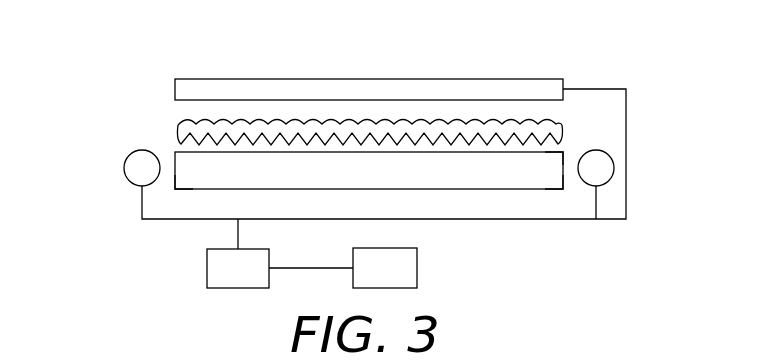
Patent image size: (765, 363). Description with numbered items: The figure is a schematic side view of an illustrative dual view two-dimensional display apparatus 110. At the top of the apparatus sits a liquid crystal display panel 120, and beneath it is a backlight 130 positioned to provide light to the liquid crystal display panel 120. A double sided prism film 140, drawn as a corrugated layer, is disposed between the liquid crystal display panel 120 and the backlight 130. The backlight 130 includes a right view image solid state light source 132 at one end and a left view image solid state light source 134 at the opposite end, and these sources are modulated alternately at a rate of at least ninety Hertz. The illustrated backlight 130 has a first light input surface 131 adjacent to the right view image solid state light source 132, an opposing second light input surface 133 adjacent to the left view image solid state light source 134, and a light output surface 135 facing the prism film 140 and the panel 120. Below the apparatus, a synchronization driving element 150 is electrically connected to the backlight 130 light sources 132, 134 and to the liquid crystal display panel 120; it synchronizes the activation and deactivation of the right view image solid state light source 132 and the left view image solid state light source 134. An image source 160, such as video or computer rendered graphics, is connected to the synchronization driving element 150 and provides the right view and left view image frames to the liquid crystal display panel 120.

The dual view 2D display apparatus 110 is at (487, 64).
The liquid crystal display panel 120 is at (184, 86).
The backlight 130 is at (172, 149).
The first light input surface 131 is at (566, 178).
The right view image solid state light source 132 is at (604, 164).
The second light input surface 133 is at (173, 181).
The left view image solid state light source 134 is at (135, 166).
The light output surface 135 is at (553, 151).
The double sided prism film 140 is at (180, 122).
The synchronization driving element 150 is at (213, 270).
The image source 160 is at (409, 270).